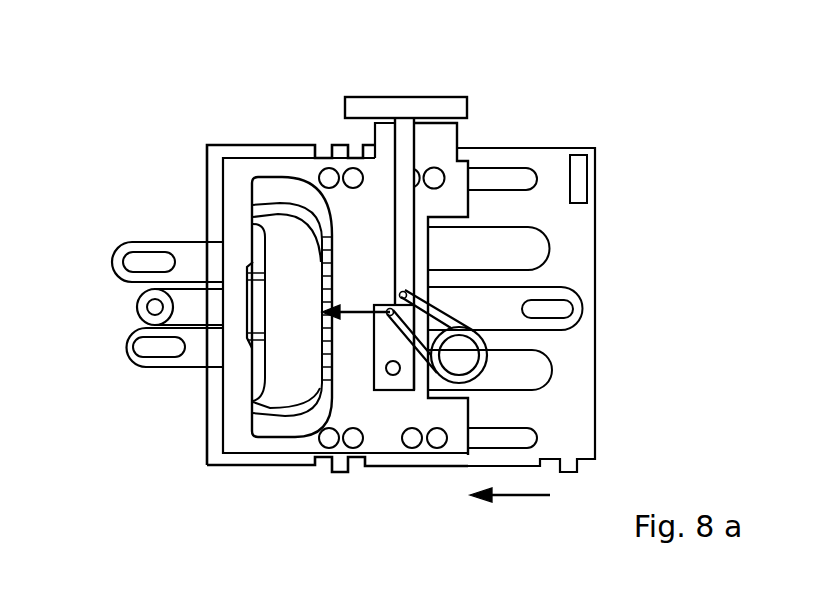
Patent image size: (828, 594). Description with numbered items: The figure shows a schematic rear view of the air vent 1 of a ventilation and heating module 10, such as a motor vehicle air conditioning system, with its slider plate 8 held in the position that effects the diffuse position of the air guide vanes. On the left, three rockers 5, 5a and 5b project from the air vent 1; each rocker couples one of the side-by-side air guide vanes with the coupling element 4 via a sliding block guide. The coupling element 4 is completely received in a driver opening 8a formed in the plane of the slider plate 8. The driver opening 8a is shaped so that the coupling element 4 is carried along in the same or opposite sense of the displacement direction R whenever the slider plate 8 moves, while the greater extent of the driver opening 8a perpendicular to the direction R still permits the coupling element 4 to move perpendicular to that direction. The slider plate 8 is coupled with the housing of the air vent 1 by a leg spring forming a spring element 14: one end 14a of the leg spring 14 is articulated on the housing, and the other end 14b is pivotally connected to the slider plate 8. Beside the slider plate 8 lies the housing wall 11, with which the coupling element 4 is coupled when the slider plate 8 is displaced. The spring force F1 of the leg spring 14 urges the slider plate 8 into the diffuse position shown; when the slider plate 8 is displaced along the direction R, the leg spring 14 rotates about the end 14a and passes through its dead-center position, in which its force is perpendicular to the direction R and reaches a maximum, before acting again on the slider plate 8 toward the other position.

The ventilation and heating module 10 is at (154, 120).
The air vent 1 is at (254, 134).
The coupling element 4 is at (280, 293).
The rocker 5 is at (140, 303).
The rocker 5a is at (130, 348).
The rocker 5b is at (120, 245).
The slider plate 8 is at (360, 255).
The driver opening 8a is at (298, 198).
The housing wall 11 is at (588, 258).
The leg spring 14 is at (490, 360).
The end of the leg spring 14a is at (406, 292).
The end of the leg spring 14b is at (389, 316).
The spring force F1 is at (363, 315).
The displacement direction R is at (522, 498).